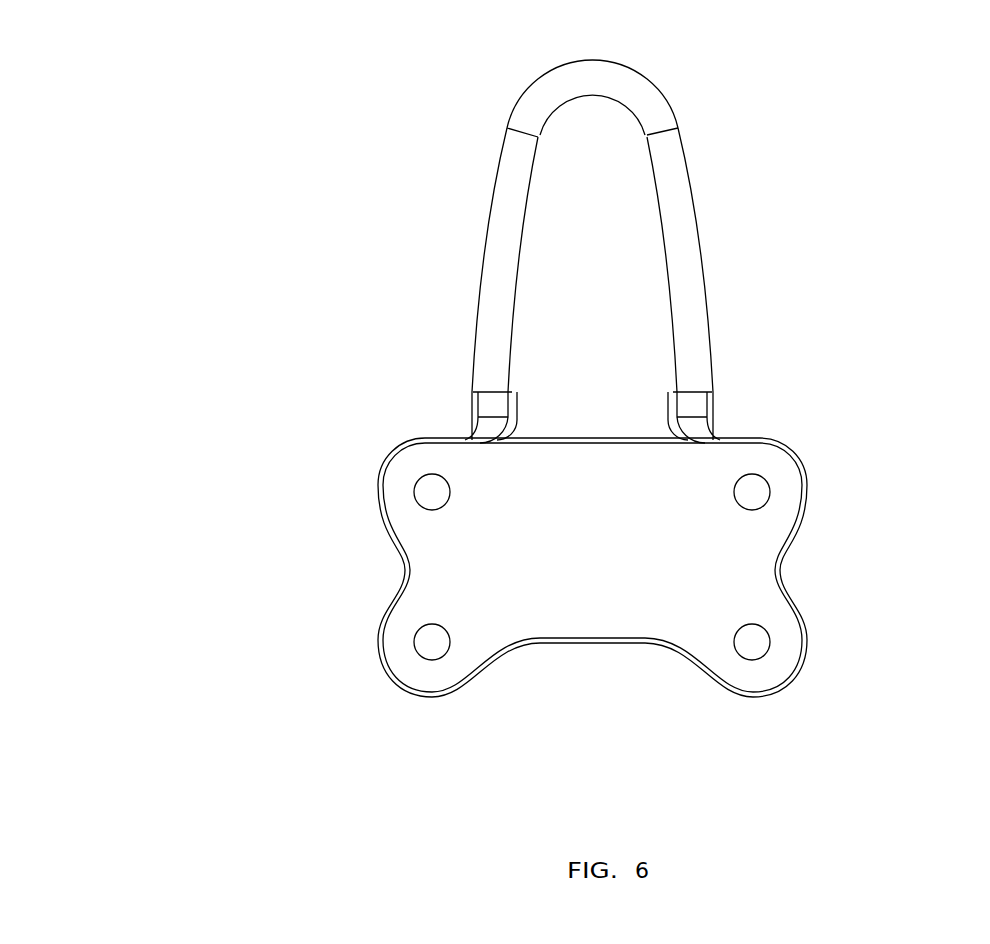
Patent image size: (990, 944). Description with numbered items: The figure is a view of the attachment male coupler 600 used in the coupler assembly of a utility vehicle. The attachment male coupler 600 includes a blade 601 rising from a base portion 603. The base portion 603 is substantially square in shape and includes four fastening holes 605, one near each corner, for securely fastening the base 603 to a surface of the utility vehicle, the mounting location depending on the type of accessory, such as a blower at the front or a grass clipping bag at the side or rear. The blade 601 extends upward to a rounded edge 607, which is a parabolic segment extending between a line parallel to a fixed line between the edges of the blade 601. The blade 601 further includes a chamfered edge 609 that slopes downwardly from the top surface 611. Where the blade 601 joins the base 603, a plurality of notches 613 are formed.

The attachment male coupler 600 is at (98, 611).
The blade 601 is at (601, 228).
The base portion 603 is at (655, 540).
The fastening holes 605 is at (770, 644).
The rounded edge 607 is at (602, 117).
The chamfered edge 609 is at (682, 255).
The top surface 611 is at (558, 243).
The notches 613 is at (707, 422).